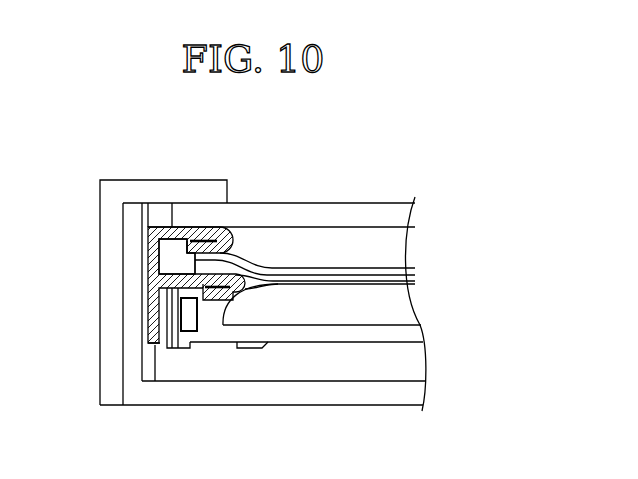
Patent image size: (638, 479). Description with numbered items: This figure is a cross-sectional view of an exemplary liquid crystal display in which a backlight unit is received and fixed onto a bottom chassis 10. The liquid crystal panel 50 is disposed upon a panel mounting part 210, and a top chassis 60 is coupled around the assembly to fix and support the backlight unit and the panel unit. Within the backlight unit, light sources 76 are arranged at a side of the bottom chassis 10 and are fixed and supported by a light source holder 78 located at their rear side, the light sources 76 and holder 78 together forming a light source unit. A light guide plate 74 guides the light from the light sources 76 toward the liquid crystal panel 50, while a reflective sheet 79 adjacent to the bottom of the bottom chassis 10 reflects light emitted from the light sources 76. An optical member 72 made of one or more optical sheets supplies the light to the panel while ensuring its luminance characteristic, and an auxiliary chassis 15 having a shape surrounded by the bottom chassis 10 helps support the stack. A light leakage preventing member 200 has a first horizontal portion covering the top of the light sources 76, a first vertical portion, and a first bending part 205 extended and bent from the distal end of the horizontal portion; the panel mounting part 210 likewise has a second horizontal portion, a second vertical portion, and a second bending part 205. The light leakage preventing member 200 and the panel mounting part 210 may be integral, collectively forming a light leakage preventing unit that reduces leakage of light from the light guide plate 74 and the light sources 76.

The bottom chassis 10 is at (328, 392).
The auxiliary chassis 15 is at (402, 363).
The liquid crystal panel 50 is at (331, 213).
The top chassis 60 is at (115, 226).
The optical member 72 is at (405, 277).
The light guide plate 74 is at (393, 303).
The light sources 76 is at (187, 313).
The light source holder 78 is at (175, 312).
The reflective sheet 79 is at (402, 332).
The light leakage preventing member 200 is at (175, 268).
The bending part 205 is at (215, 287).
The panel mounting part 210 is at (185, 233).